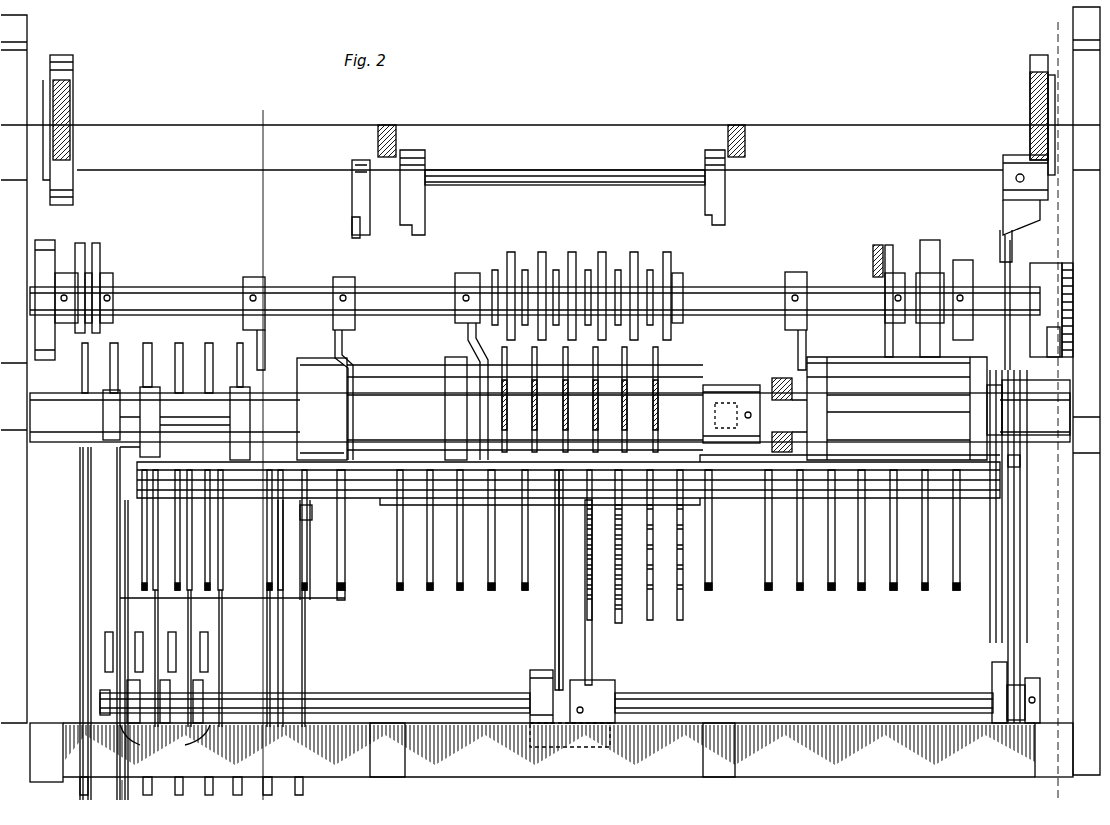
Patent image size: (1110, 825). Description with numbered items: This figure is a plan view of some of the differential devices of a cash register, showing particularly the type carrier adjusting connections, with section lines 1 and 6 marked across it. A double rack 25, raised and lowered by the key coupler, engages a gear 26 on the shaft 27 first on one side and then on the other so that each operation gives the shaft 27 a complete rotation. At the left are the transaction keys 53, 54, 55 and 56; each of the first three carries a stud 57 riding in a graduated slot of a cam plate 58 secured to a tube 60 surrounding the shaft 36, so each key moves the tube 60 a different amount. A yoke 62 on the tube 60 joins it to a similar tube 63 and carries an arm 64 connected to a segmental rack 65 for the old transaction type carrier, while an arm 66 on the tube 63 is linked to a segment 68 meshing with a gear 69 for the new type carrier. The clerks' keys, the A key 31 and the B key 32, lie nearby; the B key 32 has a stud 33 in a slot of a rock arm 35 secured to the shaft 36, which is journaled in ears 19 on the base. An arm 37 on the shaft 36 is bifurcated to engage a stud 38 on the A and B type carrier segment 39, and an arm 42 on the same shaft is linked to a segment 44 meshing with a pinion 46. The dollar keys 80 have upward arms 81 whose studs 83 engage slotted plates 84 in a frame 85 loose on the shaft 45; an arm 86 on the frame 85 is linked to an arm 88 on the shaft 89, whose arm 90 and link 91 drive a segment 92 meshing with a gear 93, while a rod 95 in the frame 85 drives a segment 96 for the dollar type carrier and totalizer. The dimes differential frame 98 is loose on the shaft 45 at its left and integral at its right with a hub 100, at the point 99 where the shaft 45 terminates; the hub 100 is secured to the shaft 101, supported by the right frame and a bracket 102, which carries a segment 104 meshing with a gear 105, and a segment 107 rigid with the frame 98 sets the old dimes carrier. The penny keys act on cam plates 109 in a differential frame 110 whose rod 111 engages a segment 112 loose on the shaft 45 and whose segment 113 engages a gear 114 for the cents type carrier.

The section line 1 is at (284, 116).
The section line 6 is at (1040, 33).
The ears 19 is at (100, 697).
The double rack 25 is at (1005, 246).
The gear 26 is at (1035, 282).
The shaft 27 is at (722, 290).
The A clerk's key 31 is at (88, 598).
The B clerk's key 32 is at (117, 625).
The stud 33 is at (105, 658).
The rock arm 35 is at (127, 705).
The shaft 36 is at (565, 735).
The arm 37 is at (592, 645).
The stud 38 is at (580, 590).
The A and B type carrier segment 39 is at (587, 503).
The arm 42 is at (1022, 637).
The segment 44 is at (1022, 565).
The shaft 45 is at (550, 401).
The pinion 46 is at (1036, 403).
The Paid out key 53 is at (157, 788).
The Charge key 54 is at (189, 788).
The Received on account key 55 is at (220, 788).
The No sale key 56 is at (249, 788).
The stud 57 is at (200, 652).
The cam plate 58 is at (165, 739).
The tube 60 is at (432, 693).
The yoke 62 is at (538, 670).
The tube 63 is at (843, 693).
The arm 64 is at (557, 632).
The segmental rack 65 is at (557, 560).
The arm 66 is at (1008, 650).
The segment 68 is at (1014, 540).
The gear 69 is at (1022, 460).
The dollar keys 80 is at (284, 613).
The arm 81 is at (300, 520).
The stud 83 is at (306, 515).
The plates 84 is at (312, 557).
The frame 85 is at (322, 409).
The arm 86 is at (352, 345).
The arm 88 is at (362, 204).
The shaft 89 is at (462, 172).
The arm 90 is at (1005, 222).
The link 91 is at (1005, 337).
The segment 92 is at (1000, 517).
The gear 93 is at (992, 410).
The rod 95 is at (352, 360).
The segment 96 is at (620, 620).
The differential frame 98 is at (512, 503).
The point of termination 99 is at (748, 405).
The hub 100 is at (722, 403).
The shaft 101 is at (897, 408).
The bracket 102 is at (781, 378).
The segment 104 is at (998, 630).
The gear 105 is at (988, 390).
The segment 107 is at (630, 623).
The cam plates 109 is at (957, 590).
The differential frame 110 is at (810, 443).
The rod 111 is at (658, 403).
The segment 112 is at (650, 620).
The segment 113 is at (990, 612).
The gear 114 is at (989, 305).
The A clerk's key A is at (80, 578).